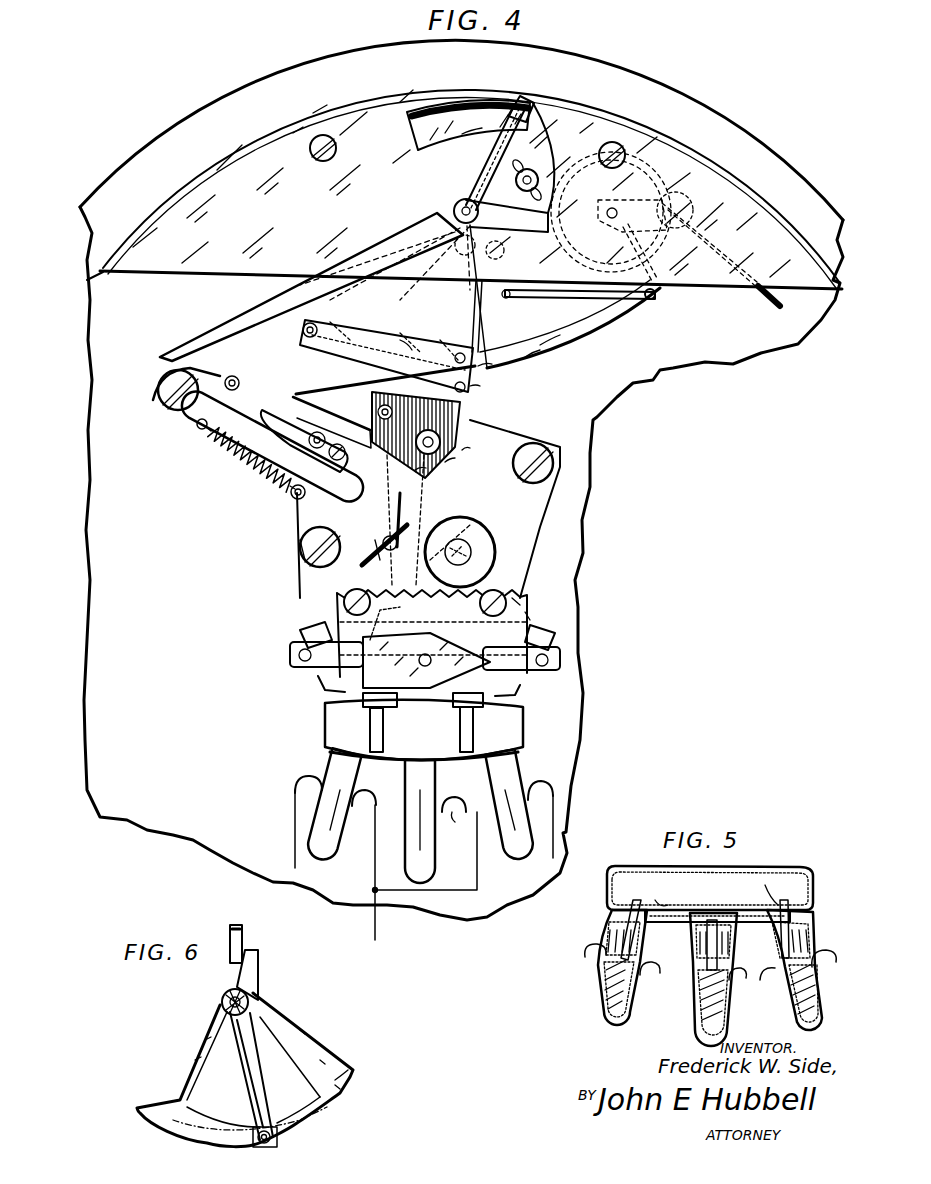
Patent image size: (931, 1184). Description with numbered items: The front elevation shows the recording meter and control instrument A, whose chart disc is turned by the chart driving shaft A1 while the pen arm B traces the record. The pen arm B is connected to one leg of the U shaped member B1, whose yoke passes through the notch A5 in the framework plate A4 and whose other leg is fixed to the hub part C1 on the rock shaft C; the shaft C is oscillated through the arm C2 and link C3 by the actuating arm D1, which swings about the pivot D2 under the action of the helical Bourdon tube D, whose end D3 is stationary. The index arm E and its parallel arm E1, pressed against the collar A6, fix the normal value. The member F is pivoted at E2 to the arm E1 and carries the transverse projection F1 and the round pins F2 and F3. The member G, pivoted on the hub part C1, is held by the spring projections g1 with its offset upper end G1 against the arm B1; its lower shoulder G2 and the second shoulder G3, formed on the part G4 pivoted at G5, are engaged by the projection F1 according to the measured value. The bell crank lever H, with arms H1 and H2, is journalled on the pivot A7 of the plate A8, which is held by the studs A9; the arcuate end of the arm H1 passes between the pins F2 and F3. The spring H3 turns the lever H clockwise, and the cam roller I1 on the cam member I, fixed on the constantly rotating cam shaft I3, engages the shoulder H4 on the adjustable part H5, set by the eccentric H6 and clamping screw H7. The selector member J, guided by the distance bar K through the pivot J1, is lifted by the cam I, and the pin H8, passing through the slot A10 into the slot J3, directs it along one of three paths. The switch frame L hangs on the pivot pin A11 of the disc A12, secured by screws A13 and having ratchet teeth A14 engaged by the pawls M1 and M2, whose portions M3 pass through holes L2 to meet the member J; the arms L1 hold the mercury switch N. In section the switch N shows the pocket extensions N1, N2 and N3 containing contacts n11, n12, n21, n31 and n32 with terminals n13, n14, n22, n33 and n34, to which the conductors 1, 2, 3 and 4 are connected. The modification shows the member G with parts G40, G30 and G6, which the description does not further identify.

In FIG. 4, the recording meter and control instrument A is at (742, 128).
In FIG. 4, the plate-like member A4 is at (461, 183).
In FIG. 4, the notch A5 is at (408, 115).
In FIG. 4, the transversely extending projections g1 is at (480, 124).
In FIG. 4, the U shaped member B1 is at (484, 160).
In FIG. 6, the U shaped member B1 is at (230, 935).
In FIG. 4, the offset upper end portion G1 is at (528, 104).
In FIG. 6, the offset upper end portion G1 is at (252, 952).
In FIG. 4, the pen arm B is at (453, 212).
In FIG. 4, the rock shaft C is at (440, 202).
In FIG. 6, the rock shaft C is at (222, 1005).
In FIG. 4, the pivot G5 is at (504, 248).
In FIG. 4, the Bourdon tube D is at (660, 175).
In FIG. 4, the pivot or shaft D2 is at (612, 208).
In FIG. 4, the stationary end D3 is at (768, 300).
In FIG. 4, the actuating arm D1 is at (657, 296).
In FIG. 4, the arm C2 is at (555, 296).
In FIG. 4, the link C3 is at (636, 304).
In FIG. 4, the part G4 is at (470, 303).
In FIG. 4, the member G is at (485, 400).
In FIG. 6, the member G is at (178, 1100).
In FIG. 4, the arm H1 is at (560, 340).
In FIG. 4, the second shoulder G3 is at (530, 355).
In FIG. 4, the transverse projection F1 is at (480, 365).
In FIG. 4, the lateral projection F3 is at (475, 388).
In FIG. 4, the index arm E is at (245, 312).
In FIG. 4, the pivot E2 is at (305, 333).
In FIG. 4, the member F is at (415, 345).
In FIG. 4, the arm E1 is at (405, 338).
In FIG. 4, the lateral projection F2 is at (458, 355).
In FIG. 4, the cam member I is at (440, 446).
In FIG. 4, the cam roller I1 is at (375, 413).
In FIG. 4, the cam shaft I3 is at (448, 460).
In FIG. 4, the shoulder G2 is at (465, 447).
In FIG. 6, the shoulder G2 is at (260, 1144).
In FIG. 4, the radius or distance bar K is at (345, 450).
In FIG. 4, the eccentric H6 is at (318, 448).
In FIG. 4, the bell crank lever H is at (225, 460).
In FIG. 4, the pivot A7 is at (245, 355).
In FIG. 4, the arm H2 is at (262, 470).
In FIG. 4, the spring H3 is at (205, 432).
In FIG. 4, the clamping screw H7 is at (352, 478).
In FIG. 4, the part H5 is at (298, 500).
In FIG. 4, the shoulder H4 is at (420, 470).
In FIG. 4, the pin H8 is at (412, 505).
In FIG. 4, the slot J3 is at (372, 568).
In FIG. 4, the supporting studs or bolts A9 is at (558, 470).
In FIG. 4, the plate A8 is at (555, 512).
In FIG. 4, the collar portion A6 is at (305, 545).
In FIG. 4, the slot A10 is at (375, 540).
In FIG. 4, the selector element J is at (462, 520).
In FIG. 4, the chart driving shaft A1 is at (463, 548).
In FIG. 4, the supporting frame L is at (465, 560).
In FIG. 4, the teeth A14 is at (330, 602).
In FIG. 4, the screws or bolts A13 is at (518, 597).
In FIG. 4, the plate or disc A12 is at (530, 612).
In FIG. 4, the transverse pivot J1 is at (385, 617).
In FIG. 4, the pawl member M1 is at (300, 630).
In FIG. 4, the pawl member M2 is at (565, 640).
In FIG. 4, the arms L1 is at (290, 660).
In FIG. 4, the pivot pin A11 is at (418, 660).
In FIG. 4, the transversely extending portion M3 is at (405, 662).
In FIG. 4, the hole L2 is at (318, 688).
In FIG. 4, the mercury switch N is at (420, 791).
In FIG. 5, the mercury switch N is at (745, 868).
In FIG. 4, the external terminal n13 is at (298, 775).
In FIG. 5, the external terminal n13 is at (587, 950).
In FIG. 4, the external terminal n14 is at (360, 790).
In FIG. 5, the external terminal n14 is at (643, 975).
In FIG. 4, the terminal n34 is at (460, 797).
In FIG. 5, the terminal n34 is at (760, 982).
In FIG. 4, the terminal n33 is at (545, 780).
In FIG. 5, the terminal n33 is at (818, 958).
In FIG. 4, the external terminal n22 is at (452, 812).
In FIG. 5, the external terminal n22 is at (732, 985).
In FIG. 4, the conductor 1 is at (557, 810).
In FIG. 4, the conductor 2 is at (477, 868).
In FIG. 4, the conductor 3 is at (295, 852).
In FIG. 4, the conductor 4 is at (375, 850).
In FIG. 5, the contact n11 is at (635, 916).
In FIG. 5, the contact n12 is at (672, 894).
In FIG. 5, the contact n21 is at (721, 926).
In FIG. 5, the contact n31 is at (795, 903).
In FIG. 5, the contact n32 is at (764, 880).
In FIG. 5, the pocket extension N1 is at (612, 940).
In FIG. 5, the pocket extension N2 is at (692, 965).
In FIG. 5, the pocket extension N3 is at (775, 970).
In FIG. 6, the radial bar G40 is at (270, 1032).
In FIG. 6, the sector edge G30 is at (342, 1085).
In FIG. 6, the pin G6 is at (282, 1135).
In FIG. 6, the hub like part C1 is at (224, 998).